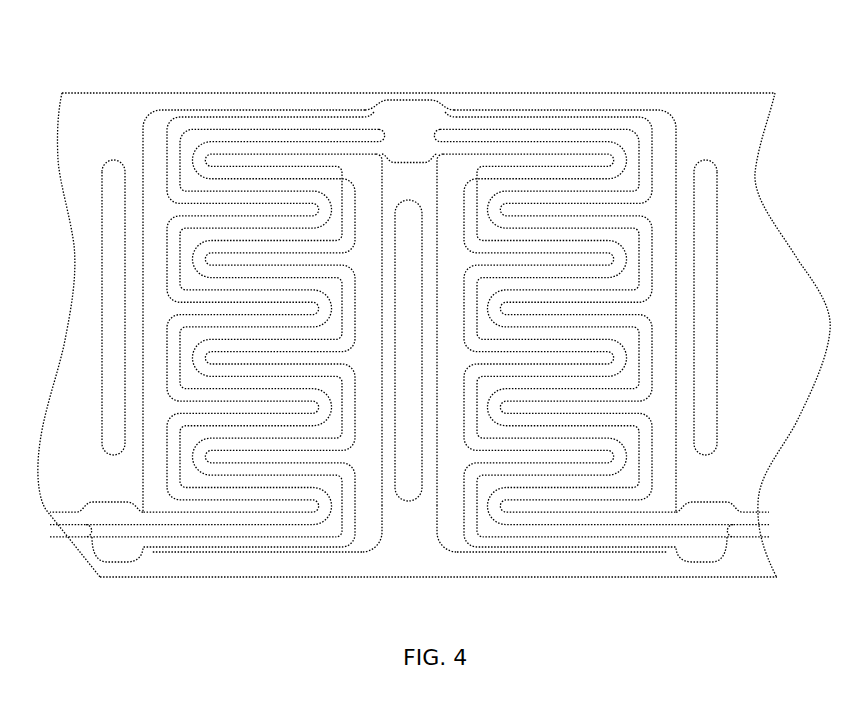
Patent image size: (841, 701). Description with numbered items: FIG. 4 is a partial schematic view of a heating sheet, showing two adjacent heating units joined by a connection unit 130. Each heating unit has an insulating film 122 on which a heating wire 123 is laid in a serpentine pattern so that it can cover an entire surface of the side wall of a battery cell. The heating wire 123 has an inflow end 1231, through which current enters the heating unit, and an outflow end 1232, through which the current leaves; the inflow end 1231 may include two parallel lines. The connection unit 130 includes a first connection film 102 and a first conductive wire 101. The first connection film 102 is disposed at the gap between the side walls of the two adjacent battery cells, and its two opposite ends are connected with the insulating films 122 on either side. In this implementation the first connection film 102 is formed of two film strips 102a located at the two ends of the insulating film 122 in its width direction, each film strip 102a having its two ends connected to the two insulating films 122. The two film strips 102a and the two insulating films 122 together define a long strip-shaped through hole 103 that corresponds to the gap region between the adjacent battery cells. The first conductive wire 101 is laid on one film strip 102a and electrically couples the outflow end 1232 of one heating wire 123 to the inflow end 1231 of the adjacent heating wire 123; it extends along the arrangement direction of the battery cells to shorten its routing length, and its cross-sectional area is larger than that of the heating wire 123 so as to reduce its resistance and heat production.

The connection unit 130 is at (719, 72).
The insulating film 122 is at (262, 572).
The heating wire 123 is at (217, 192).
The inflow end 1231 is at (372, 116).
The first conductive wire 101 is at (410, 100).
The film strip 102a is at (411, 178).
The first connection film 102 is at (410, 528).
The through hole 103 is at (414, 446).
The outflow end 1232 is at (150, 523).